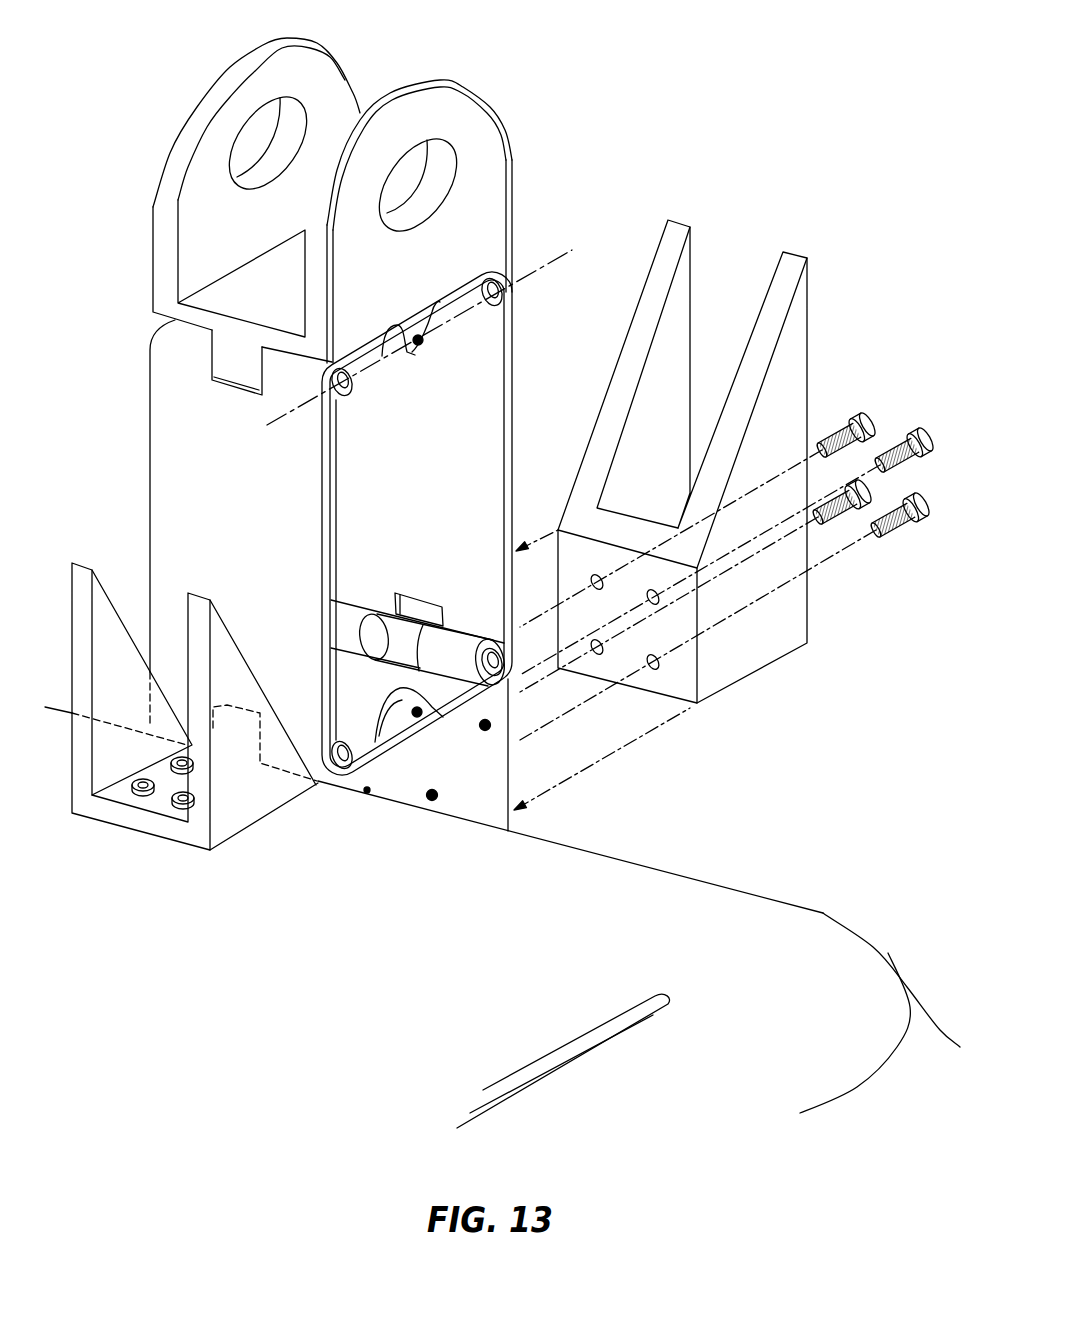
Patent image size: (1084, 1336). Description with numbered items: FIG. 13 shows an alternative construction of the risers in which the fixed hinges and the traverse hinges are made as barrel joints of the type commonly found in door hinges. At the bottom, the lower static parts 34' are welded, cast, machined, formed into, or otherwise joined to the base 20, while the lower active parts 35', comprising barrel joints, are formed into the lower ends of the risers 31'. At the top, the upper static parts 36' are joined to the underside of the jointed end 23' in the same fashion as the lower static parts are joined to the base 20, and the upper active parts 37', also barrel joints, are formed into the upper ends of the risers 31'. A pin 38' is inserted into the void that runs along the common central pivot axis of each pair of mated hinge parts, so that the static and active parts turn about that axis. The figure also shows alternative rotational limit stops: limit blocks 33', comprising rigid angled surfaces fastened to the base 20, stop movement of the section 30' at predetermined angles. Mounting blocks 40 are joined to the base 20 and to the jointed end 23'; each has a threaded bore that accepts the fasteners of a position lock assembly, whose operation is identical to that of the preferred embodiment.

The base 20 is at (467, 798).
The jointed end 23' is at (387, 200).
The section 30' is at (194, 523).
The riser 31' is at (330, 551).
The limit block 33' is at (504, 574).
The lower static part 34' is at (419, 571).
The lower active part 35' is at (432, 616).
The upper static part 36' is at (167, 362).
The upper active part 37' is at (342, 344).
The pin 38' is at (483, 587).
The mounting block 40 is at (417, 355).